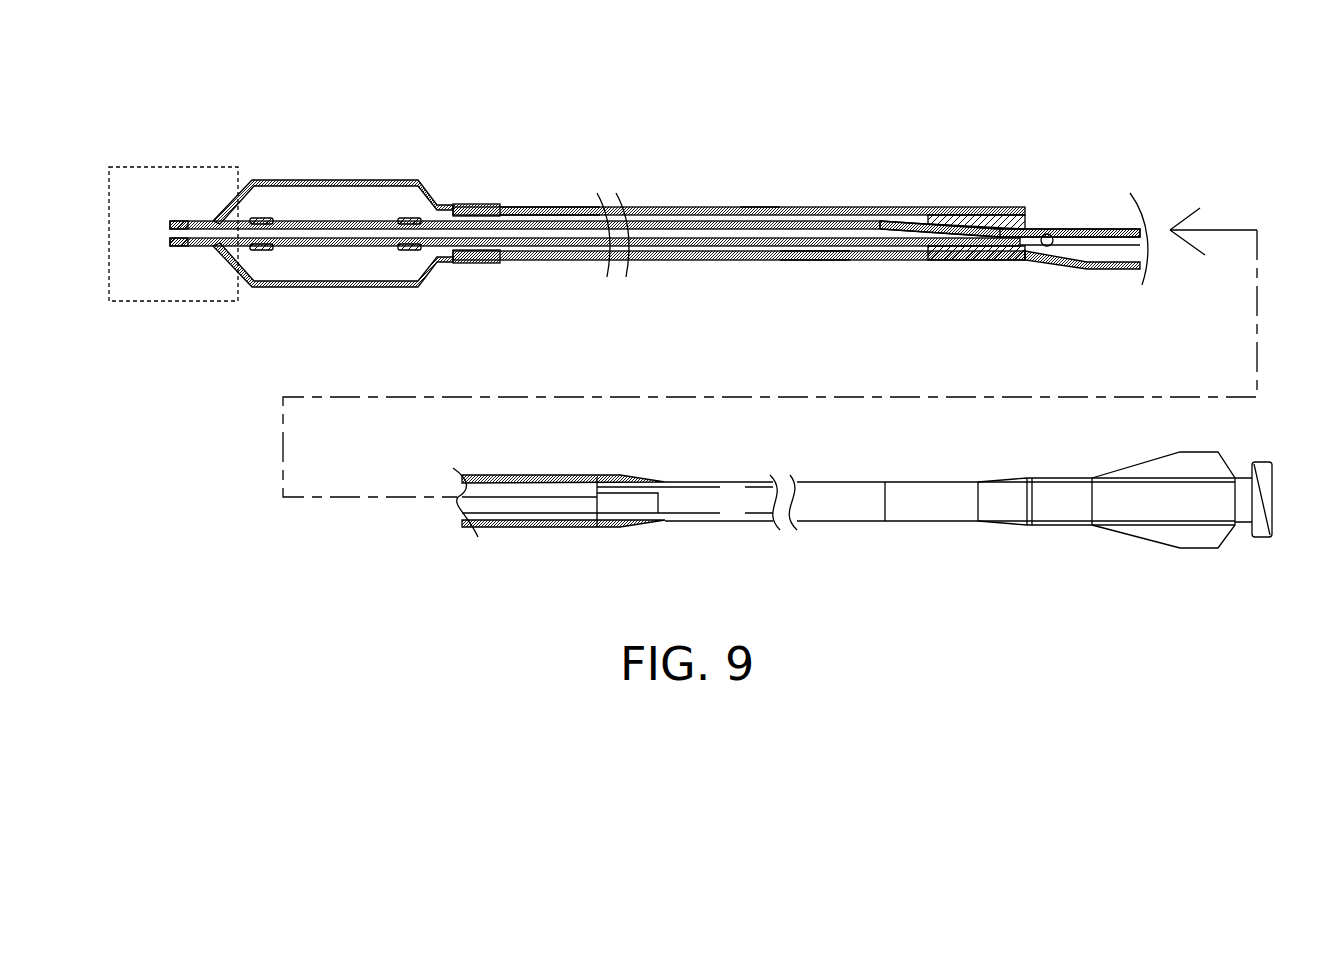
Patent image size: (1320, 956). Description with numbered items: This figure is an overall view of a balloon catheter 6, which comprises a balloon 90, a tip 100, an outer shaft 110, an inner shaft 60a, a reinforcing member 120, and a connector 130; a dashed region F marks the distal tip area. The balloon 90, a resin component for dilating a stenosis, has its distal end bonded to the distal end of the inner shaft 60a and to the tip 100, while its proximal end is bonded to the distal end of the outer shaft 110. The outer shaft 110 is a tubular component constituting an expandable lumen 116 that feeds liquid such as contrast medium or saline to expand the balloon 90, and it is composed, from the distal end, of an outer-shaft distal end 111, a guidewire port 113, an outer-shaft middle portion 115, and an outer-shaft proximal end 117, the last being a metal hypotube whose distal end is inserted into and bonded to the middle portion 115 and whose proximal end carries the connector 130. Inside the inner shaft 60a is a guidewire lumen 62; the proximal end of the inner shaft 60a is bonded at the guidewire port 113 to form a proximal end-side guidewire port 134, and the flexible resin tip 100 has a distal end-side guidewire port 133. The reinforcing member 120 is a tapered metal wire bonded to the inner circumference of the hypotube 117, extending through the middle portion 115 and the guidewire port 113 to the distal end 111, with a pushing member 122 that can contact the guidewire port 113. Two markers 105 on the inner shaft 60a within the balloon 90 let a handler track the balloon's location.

The balloon catheter 6 is at (731, 117).
The inner shaft 60a is at (538, 210).
The guidewire lumen 62 is at (826, 230).
The balloon 90 is at (355, 168).
The tip 100 is at (179, 212).
The markers 105 is at (257, 250).
The outer shaft 110 is at (673, 202).
The outer-shaft distal end 111 is at (815, 258).
The guidewire port 113 is at (952, 258).
The outer-shaft middle portion 115 is at (1112, 268).
The expandable lumen 116 is at (758, 210).
The outer-shaft proximal end 117 is at (858, 507).
The reinforcing member 120 is at (1117, 228).
The pushing member 122 is at (1050, 236).
The connector 130 is at (1214, 465).
The distal end-side guidewire port 133 is at (168, 232).
The proximal end-side guidewire port 134 is at (1032, 212).
The detail region F is at (112, 301).